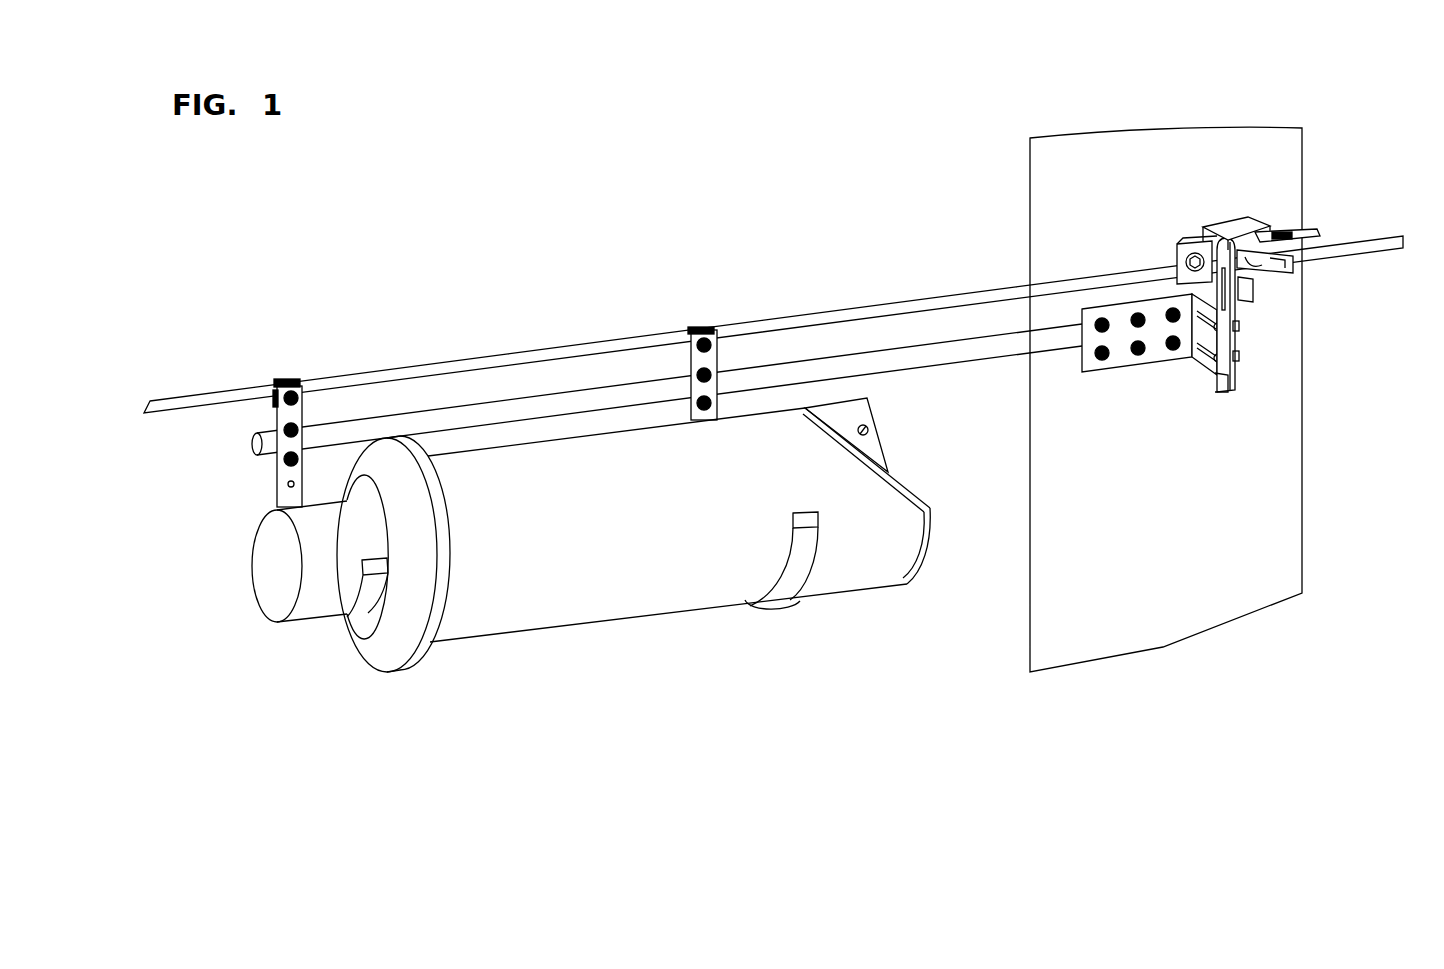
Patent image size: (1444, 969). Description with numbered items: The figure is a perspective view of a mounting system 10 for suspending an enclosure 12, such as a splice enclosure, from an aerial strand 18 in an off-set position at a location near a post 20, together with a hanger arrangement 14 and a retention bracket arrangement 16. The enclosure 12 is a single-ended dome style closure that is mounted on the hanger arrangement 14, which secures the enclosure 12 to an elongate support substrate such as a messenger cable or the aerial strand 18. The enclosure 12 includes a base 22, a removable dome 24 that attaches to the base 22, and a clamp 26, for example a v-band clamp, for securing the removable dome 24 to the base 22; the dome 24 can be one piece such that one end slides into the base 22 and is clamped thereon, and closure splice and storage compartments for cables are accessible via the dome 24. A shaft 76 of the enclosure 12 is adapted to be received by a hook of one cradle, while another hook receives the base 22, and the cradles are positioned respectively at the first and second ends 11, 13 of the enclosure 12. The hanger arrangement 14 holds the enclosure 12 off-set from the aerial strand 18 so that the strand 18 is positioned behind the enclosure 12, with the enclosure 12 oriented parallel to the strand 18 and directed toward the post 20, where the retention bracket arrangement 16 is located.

The mounting system 10 is at (807, 139).
The first end 11 is at (579, 601).
The enclosure 12 is at (667, 580).
The second end 13 is at (822, 632).
The hanger arrangement 14 is at (219, 460).
The retention bracket arrangement 16 is at (1279, 324).
The aerial strand 18 is at (470, 359).
The post 20 is at (1143, 539).
The base 22 is at (500, 634).
The removable dome 24 is at (905, 487).
The clamp 26 is at (872, 415).
The shaft 76 is at (308, 612).